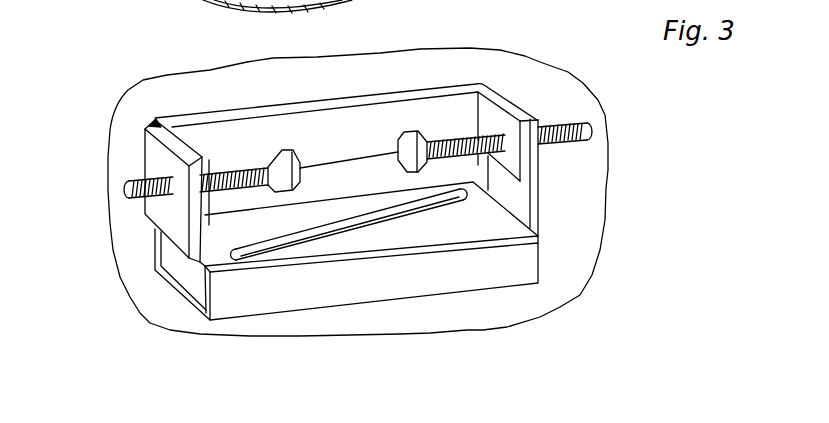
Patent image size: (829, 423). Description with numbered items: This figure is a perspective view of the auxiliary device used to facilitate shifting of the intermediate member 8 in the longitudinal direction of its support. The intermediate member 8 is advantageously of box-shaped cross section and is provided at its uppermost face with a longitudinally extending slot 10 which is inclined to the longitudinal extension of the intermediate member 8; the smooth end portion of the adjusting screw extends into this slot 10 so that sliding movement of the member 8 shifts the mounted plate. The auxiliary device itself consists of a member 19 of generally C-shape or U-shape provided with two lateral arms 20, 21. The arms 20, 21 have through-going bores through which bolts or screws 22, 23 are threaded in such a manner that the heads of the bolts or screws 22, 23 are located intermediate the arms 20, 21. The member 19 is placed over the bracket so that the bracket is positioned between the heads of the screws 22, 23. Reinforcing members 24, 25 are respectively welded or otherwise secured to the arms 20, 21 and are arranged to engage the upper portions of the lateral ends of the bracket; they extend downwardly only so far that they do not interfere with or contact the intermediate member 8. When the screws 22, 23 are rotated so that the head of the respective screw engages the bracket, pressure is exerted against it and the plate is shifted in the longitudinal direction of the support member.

The intermediate member 8 is at (512, 225).
The longitudinally extending slot 10 is at (365, 218).
The C-shaped or U-shaped member 19 is at (405, 108).
The lateral arm 20 is at (492, 110).
The lateral arm 21 is at (180, 142).
The bolt or screw 22 is at (567, 123).
The bolt or screw 23 is at (143, 180).
The reinforcing member 24 is at (537, 180).
The reinforcing member 25 is at (198, 233).